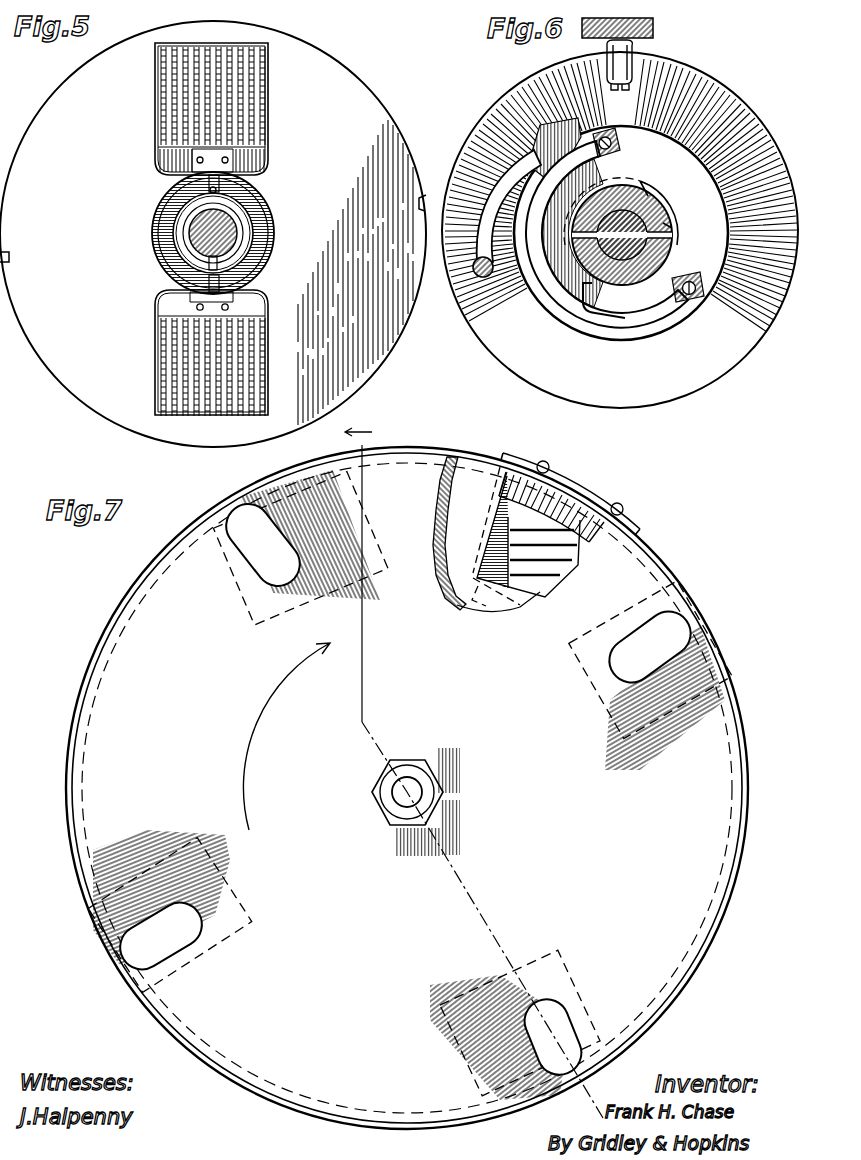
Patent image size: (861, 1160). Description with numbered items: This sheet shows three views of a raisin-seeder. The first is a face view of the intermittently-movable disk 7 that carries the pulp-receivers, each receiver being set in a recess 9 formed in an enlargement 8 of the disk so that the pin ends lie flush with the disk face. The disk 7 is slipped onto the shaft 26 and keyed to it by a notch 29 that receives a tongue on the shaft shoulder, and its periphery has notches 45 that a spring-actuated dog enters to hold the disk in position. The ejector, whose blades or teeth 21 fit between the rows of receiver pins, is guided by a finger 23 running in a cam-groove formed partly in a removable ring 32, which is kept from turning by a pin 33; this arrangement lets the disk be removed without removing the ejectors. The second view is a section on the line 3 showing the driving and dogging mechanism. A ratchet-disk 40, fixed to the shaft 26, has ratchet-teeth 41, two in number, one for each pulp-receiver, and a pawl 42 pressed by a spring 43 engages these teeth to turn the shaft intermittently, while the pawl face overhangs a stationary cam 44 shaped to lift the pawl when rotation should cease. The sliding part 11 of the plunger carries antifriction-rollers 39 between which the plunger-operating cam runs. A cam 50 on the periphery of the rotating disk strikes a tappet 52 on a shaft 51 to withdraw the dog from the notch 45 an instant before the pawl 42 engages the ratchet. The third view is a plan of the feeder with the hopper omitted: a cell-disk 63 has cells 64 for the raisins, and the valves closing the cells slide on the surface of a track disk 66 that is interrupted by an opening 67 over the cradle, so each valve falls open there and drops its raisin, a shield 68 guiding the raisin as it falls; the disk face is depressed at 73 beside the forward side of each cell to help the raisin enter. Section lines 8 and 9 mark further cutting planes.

In FIG. 5, the section line 3 is at (242, 108).
In FIG. 5, the intermittently-movable disk 7 is at (213, 234).
In FIG. 7, the enlargement 8 is at (480, 775).
In FIG. 7, the recess 9 is at (481, 521).
In FIG. 6, the sliding part of plunger 11 is at (653, 24).
In FIG. 5, the blades or teeth 21 is at (262, 118).
In FIG. 5, the finger 23 is at (172, 285).
In FIG. 5, the shaft 26 is at (200, 231).
In FIG. 5, the notch 29 is at (222, 258).
In FIG. 5, the removable ring 32 is at (252, 197).
In FIG. 5, the pin 33 is at (237, 181).
In FIG. 6, the antifriction-rollers 39 is at (634, 57).
In FIG. 6, the ratchet-disk 40 is at (670, 211).
In FIG. 6, the ratchet-teeth 41 is at (642, 186).
In FIG. 6, the pawl 42 is at (576, 290).
In FIG. 6, the spring 43 is at (556, 283).
In FIG. 6, the stationary cam 44 is at (600, 169).
In FIG. 5, the notches 45 is at (9, 262).
In FIG. 6, the cam 50 is at (546, 130).
In FIG. 6, the shaft 51 is at (478, 276).
In FIG. 6, the tappet 52 is at (492, 198).
In FIG. 7, the cell-disk 63 is at (407, 788).
In FIG. 7, the cells 64 is at (405, 788).
In FIG. 7, the disk forming track 66 is at (485, 473).
In FIG. 7, the opening 67 is at (440, 535).
In FIG. 7, the shield 68 is at (565, 509).
In FIG. 7, the depression 73 is at (318, 516).